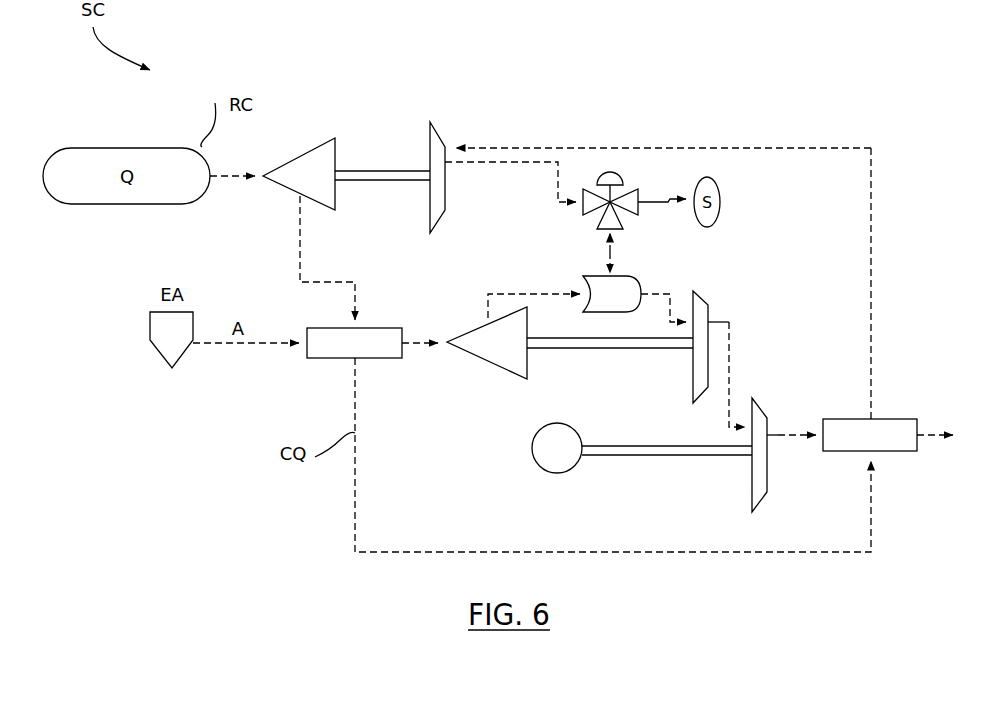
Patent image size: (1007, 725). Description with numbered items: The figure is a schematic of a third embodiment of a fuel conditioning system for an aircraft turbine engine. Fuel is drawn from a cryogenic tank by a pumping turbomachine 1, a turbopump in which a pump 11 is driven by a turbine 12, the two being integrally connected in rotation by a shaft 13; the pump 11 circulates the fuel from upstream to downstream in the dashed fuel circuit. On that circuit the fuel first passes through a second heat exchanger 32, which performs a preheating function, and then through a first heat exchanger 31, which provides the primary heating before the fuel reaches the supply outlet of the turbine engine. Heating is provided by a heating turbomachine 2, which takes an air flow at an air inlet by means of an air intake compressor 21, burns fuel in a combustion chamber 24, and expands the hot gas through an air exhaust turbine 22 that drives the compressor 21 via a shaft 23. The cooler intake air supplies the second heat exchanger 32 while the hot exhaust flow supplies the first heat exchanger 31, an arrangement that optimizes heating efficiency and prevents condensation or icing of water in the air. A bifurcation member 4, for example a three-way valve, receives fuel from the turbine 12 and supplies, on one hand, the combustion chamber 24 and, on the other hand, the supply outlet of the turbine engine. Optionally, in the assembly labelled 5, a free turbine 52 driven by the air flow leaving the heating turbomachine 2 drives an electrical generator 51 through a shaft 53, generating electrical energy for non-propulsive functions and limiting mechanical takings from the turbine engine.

The pumping turbomachine 1 is at (270, 87).
The pump 11 is at (279, 165).
The turbine 12 is at (437, 137).
The shaft 13 is at (362, 168).
The bifurcation member 4 is at (610, 172).
The combustion chamber 24 is at (583, 283).
The heating turbomachine 2 is at (728, 304).
The air intake compressor 21 is at (491, 365).
The air exhaust turbine 22 is at (693, 378).
The shaft 23 is at (605, 350).
The third stage (motor-turbine unit) 5 is at (777, 401).
The electrical generator 51 is at (548, 473).
The free turbine 52 is at (752, 476).
The shaft 53 is at (637, 457).
The first heat exchanger 31 is at (900, 419).
The second heat exchanger 32 is at (380, 328).